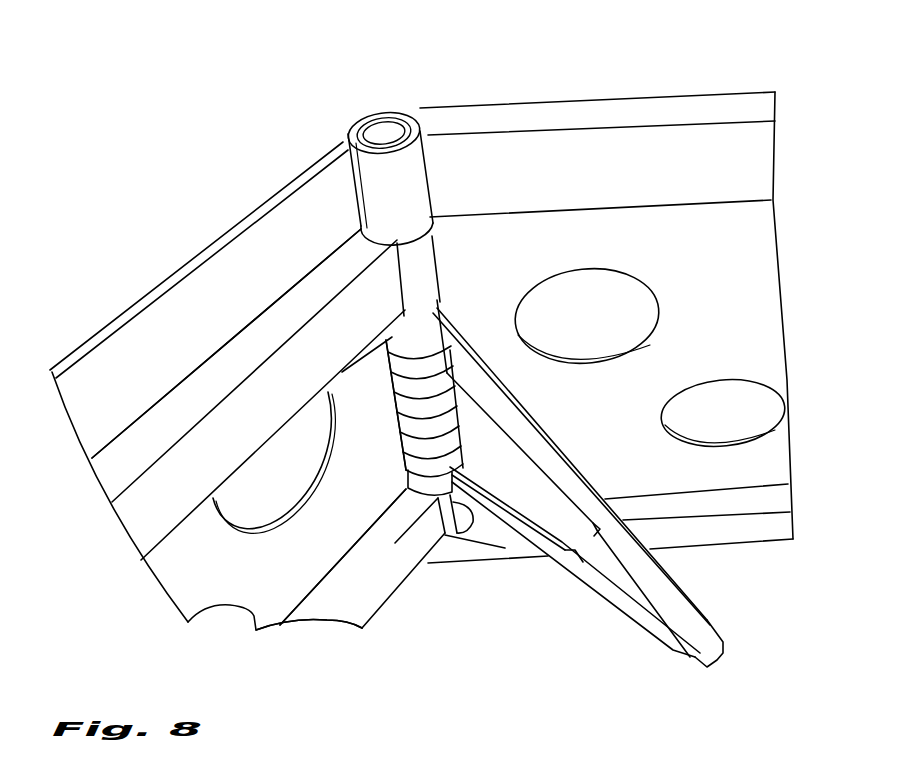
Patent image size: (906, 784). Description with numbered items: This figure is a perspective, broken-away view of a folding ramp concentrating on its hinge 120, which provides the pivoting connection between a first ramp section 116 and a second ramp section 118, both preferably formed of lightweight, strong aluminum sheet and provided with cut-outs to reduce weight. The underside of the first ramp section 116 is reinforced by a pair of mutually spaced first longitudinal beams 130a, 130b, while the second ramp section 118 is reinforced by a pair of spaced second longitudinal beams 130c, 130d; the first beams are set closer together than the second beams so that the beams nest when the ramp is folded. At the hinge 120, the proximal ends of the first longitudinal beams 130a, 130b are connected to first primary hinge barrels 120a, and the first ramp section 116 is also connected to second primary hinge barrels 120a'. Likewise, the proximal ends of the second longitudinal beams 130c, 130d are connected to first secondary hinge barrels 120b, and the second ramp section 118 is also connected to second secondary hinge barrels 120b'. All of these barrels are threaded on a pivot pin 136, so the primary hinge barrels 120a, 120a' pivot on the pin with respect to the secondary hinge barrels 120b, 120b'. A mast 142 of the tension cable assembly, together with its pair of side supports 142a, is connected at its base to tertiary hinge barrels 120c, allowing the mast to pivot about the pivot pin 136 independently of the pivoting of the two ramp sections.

The first ramp section 116 is at (155, 312).
The second ramp section 118 is at (747, 312).
The hinge 120 is at (344, 137).
The first primary hinge barrels 120a is at (472, 394).
The second primary hinge barrels 120a' is at (363, 416).
The first secondary hinge barrels 120b is at (385, 343).
The second secondary hinge barrels 120b' is at (434, 422).
The tertiary hinge barrels 120c is at (390, 333).
The first longitudinal beam 130a is at (387, 585).
The first longitudinal beam 130b is at (287, 305).
The second longitudinal beam 130c is at (710, 539).
The second longitudinal beam 130d is at (630, 107).
The pivot pin 136 is at (380, 128).
The mast 142 is at (563, 522).
The side supports 142a is at (568, 455).